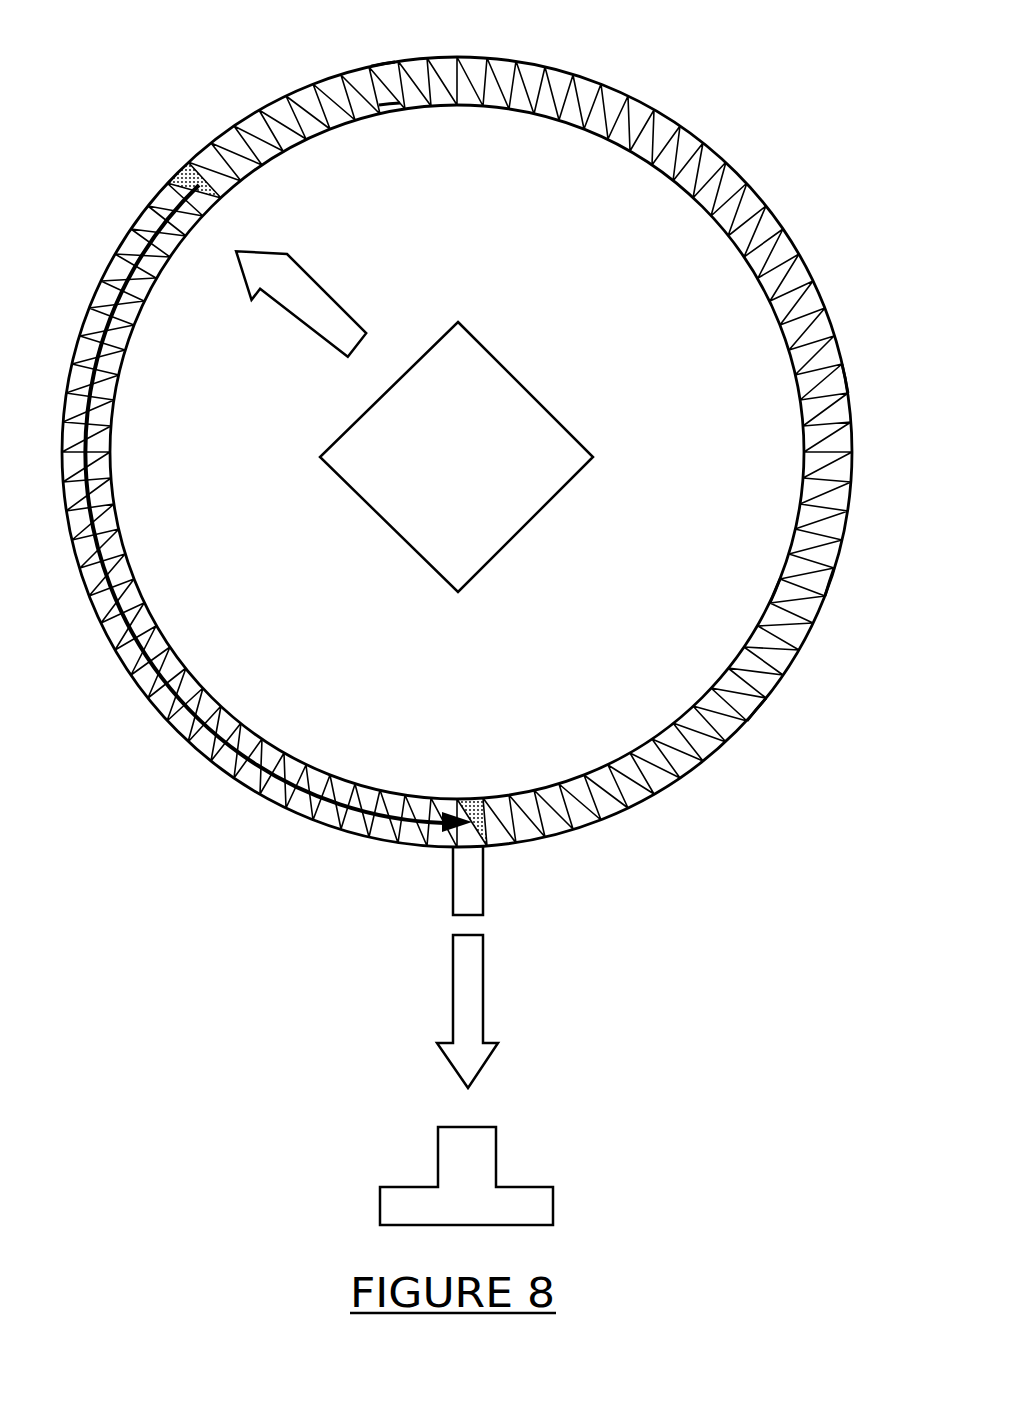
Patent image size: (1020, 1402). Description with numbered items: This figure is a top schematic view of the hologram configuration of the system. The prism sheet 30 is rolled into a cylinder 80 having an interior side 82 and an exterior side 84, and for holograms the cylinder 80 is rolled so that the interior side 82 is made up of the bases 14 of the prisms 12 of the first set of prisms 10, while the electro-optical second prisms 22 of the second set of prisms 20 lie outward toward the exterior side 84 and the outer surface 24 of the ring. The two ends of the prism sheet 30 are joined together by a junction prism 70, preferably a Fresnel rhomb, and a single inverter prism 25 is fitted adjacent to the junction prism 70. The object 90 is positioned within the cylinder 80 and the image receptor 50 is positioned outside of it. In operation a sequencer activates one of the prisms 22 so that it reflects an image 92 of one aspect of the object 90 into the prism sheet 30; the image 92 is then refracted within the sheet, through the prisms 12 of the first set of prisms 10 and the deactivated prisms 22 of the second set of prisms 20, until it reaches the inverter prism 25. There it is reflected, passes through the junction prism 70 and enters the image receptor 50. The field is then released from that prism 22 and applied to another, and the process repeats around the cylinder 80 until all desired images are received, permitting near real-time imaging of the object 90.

The first set of prisms 10 is at (338, 124).
The prisms of the first set 12 is at (286, 150).
The bases of the prisms 14 is at (391, 113).
The second set of prisms 20 is at (495, 425).
The second prisms 22 is at (170, 175).
The outer surface 24 is at (383, 61).
The inverter prism 25 is at (466, 797).
The prism sheet 30 is at (789, 235).
The image receptor 50 is at (554, 1205).
The junction prism 70 is at (444, 803).
The cylinder 80 is at (749, 720).
The interior side 82 is at (780, 582).
The exterior side 84 is at (828, 590).
The object 90 is at (555, 415).
The image 92 is at (315, 290).